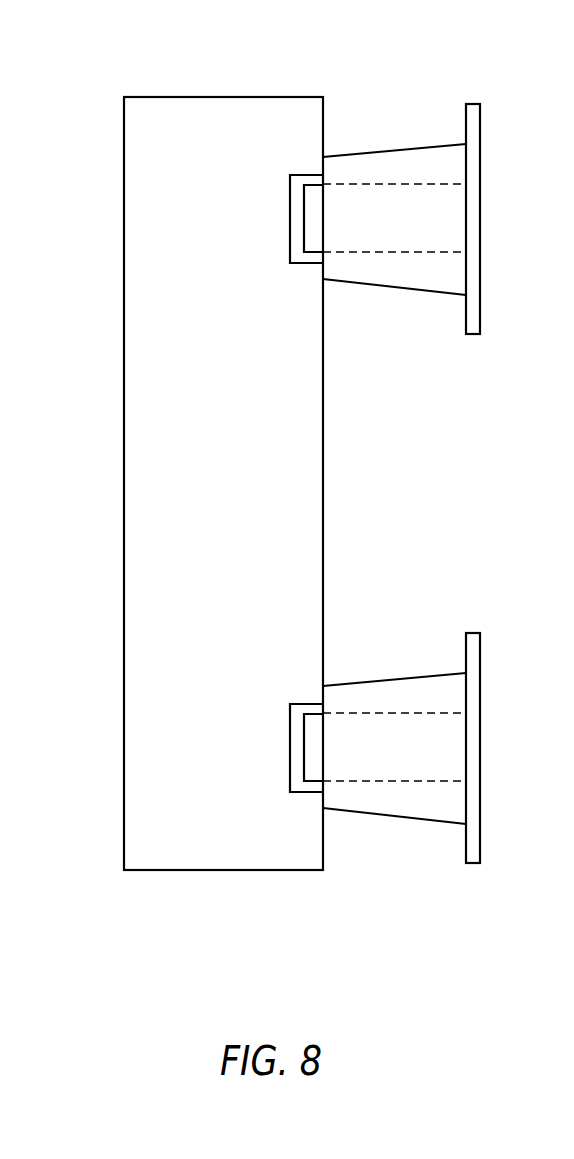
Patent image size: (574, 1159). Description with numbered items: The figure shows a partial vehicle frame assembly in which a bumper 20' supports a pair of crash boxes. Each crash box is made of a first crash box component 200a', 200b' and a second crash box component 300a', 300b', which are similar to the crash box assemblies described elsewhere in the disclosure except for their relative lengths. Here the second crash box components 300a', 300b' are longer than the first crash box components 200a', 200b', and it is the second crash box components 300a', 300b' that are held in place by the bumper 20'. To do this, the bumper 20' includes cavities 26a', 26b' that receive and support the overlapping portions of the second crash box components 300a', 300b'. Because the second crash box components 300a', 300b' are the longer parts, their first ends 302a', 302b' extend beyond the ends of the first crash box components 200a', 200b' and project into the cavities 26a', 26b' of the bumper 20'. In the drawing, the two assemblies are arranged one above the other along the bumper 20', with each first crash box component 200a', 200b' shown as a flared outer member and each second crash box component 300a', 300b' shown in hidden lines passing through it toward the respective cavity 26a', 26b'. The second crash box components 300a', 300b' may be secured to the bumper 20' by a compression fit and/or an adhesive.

The bumper 20' is at (204, 514).
The cavity 26b' is at (256, 155).
The cavity 26a' is at (256, 684).
The first crash box component 200b' is at (401, 167).
The first crash box component 200a' is at (401, 696).
The second crash box component 300b' is at (408, 154).
The second crash box component 300a' is at (408, 683).
The first end 302b' is at (184, 243).
The first end 302a' is at (184, 772).